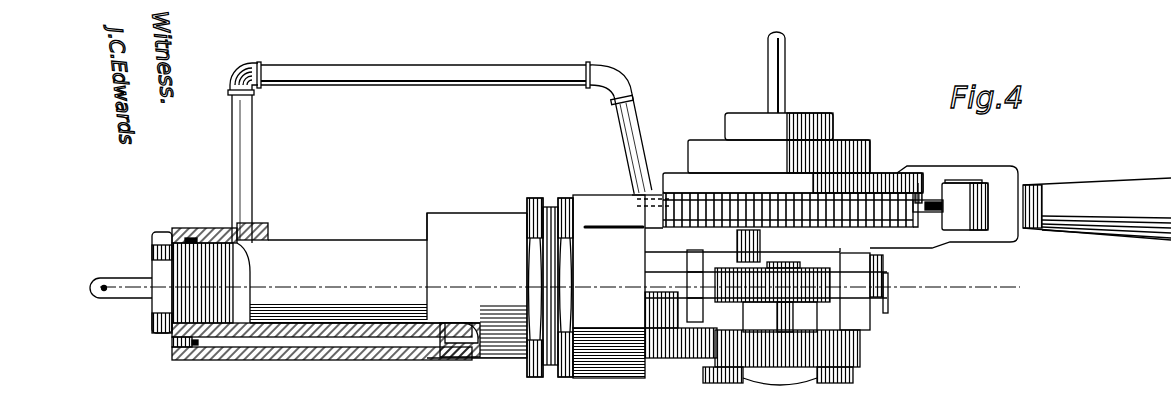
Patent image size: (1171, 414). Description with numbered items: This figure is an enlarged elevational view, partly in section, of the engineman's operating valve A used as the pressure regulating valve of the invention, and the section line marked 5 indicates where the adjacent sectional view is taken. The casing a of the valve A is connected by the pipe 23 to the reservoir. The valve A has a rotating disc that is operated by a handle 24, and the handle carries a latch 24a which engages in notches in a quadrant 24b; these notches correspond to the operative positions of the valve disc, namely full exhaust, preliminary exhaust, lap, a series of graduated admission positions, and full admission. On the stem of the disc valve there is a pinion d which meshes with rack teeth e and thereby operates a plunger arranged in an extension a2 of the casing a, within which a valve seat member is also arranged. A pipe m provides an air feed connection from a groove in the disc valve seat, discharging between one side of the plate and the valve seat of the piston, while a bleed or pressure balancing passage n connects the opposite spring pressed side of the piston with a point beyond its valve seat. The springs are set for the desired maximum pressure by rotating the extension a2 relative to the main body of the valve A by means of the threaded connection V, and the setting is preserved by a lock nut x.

The pipe m is at (466, 76).
The bleed or pressure balancing passage n is at (276, 340).
The extension of the casing a2 is at (355, 318).
The threaded connection V is at (550, 204).
The lock nut x is at (566, 367).
The rack teeth e is at (730, 292).
The pinion d is at (806, 300).
The quadrant 24b is at (700, 203).
The casing a is at (868, 152).
The controlling valve A is at (848, 132).
The pipe 23 is at (785, 50).
The latch 24a is at (940, 210).
The handle 24 is at (1102, 190).
The section line 5 is at (138, 273).